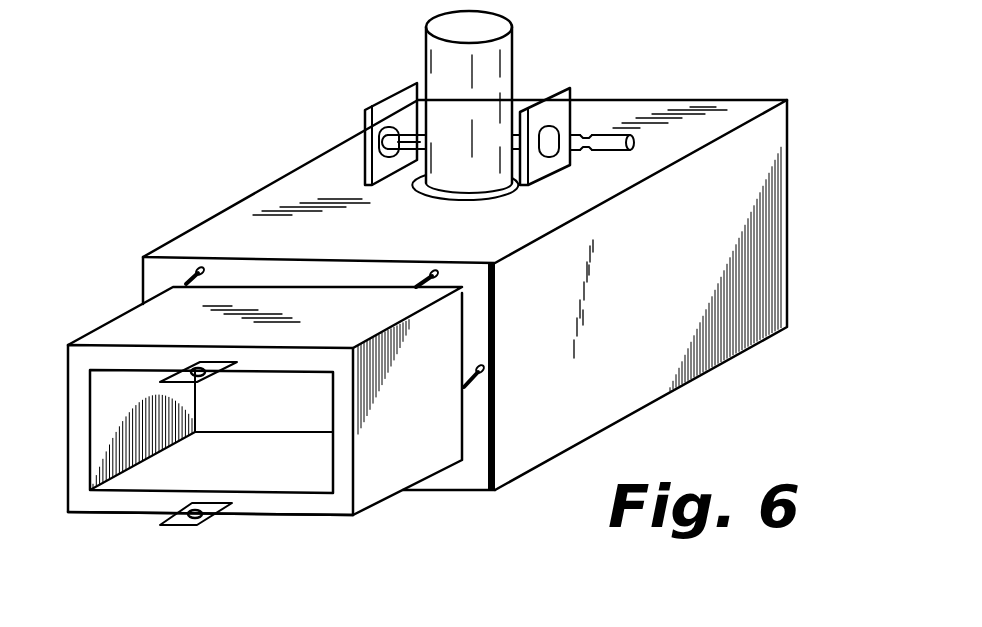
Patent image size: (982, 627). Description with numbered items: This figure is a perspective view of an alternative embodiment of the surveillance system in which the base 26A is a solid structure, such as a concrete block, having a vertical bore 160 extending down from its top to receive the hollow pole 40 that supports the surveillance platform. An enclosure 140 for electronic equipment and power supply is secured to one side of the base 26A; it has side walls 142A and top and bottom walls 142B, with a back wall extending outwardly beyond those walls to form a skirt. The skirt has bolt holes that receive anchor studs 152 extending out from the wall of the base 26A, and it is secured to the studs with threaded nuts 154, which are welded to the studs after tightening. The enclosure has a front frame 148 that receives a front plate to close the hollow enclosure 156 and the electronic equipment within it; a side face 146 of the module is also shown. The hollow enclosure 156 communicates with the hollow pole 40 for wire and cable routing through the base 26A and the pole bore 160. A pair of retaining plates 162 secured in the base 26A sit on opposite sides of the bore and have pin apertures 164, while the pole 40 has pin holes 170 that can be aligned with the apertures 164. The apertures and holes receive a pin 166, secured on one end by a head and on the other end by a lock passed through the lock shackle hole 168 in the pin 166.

The base 26A is at (342, 246).
The hollow pole 40 is at (428, 58).
The enclosure 140 is at (310, 426).
The side walls 142A is at (368, 498).
The top and bottom walls 142B is at (125, 328).
The side panel 146 is at (475, 483).
The front frame 148 is at (303, 505).
The anchor studs 152 is at (192, 277).
The threaded nuts 154 is at (496, 358).
The hollow enclosure 156 is at (288, 419).
The vertical bore 160 is at (472, 200).
The bracket plate 162 is at (566, 102).
The pin apertures 164 is at (387, 162).
The pin 166 is at (634, 142).
The lock shackle hole 168 is at (590, 130).
The pin holes 170 is at (497, 136).